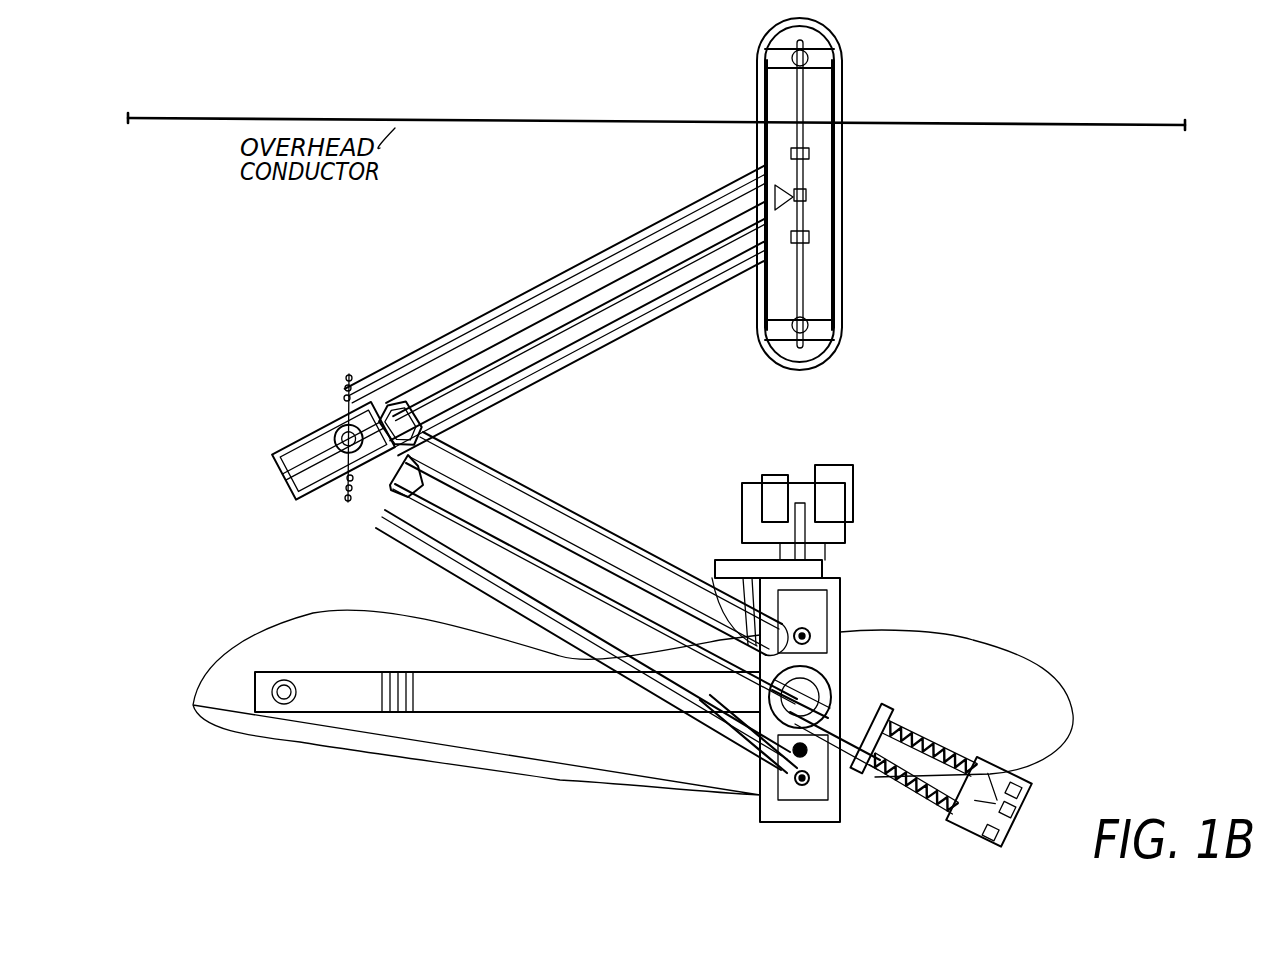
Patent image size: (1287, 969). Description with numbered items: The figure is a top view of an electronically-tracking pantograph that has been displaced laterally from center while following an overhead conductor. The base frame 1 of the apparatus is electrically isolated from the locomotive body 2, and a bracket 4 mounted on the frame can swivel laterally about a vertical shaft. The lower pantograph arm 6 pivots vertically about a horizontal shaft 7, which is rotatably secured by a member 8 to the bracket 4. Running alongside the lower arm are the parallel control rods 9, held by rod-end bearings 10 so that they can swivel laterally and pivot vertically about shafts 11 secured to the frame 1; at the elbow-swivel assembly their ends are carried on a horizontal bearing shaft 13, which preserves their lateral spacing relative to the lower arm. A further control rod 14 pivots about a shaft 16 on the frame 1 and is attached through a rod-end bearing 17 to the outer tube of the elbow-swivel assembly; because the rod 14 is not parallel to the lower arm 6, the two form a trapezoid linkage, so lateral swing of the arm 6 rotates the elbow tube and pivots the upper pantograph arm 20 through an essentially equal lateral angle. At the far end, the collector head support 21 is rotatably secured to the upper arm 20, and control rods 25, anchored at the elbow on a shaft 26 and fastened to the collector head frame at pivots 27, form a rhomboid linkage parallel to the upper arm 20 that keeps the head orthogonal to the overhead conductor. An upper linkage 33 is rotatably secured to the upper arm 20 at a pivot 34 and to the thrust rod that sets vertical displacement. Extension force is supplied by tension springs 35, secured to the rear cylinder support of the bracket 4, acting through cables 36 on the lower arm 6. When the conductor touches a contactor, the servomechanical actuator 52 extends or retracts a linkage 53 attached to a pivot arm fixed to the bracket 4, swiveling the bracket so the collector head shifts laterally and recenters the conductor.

The base frame 1 is at (345, 688).
The locomotive body 2 is at (410, 740).
The bracket 4 is at (900, 716).
The lower pantograph arm 6 is at (560, 560).
The horizontal shaft 7 is at (828, 675).
The member 8 is at (782, 740).
The parallel control rods 9 is at (522, 468).
The rod-end bearings 10 is at (812, 630).
The shafts 11 is at (812, 636).
The horizontal bearing shaft 13 is at (350, 505).
The control rod 14 is at (505, 585).
The shaft 16 is at (792, 786).
The rod-end bearing 17 is at (380, 520).
The upper pantograph arm 20 is at (620, 300).
The collector head support 21 is at (810, 203).
The control rods 25 is at (640, 240).
The shaft 26 is at (345, 396).
The pivots 27 is at (812, 152).
The upper linkage 33 is at (300, 438).
The pivot 34 is at (292, 470).
The tension springs 35 is at (962, 757).
The cables 36 is at (872, 705).
The servomechanical actuator 52 is at (745, 523).
The linkage 53 is at (725, 585).